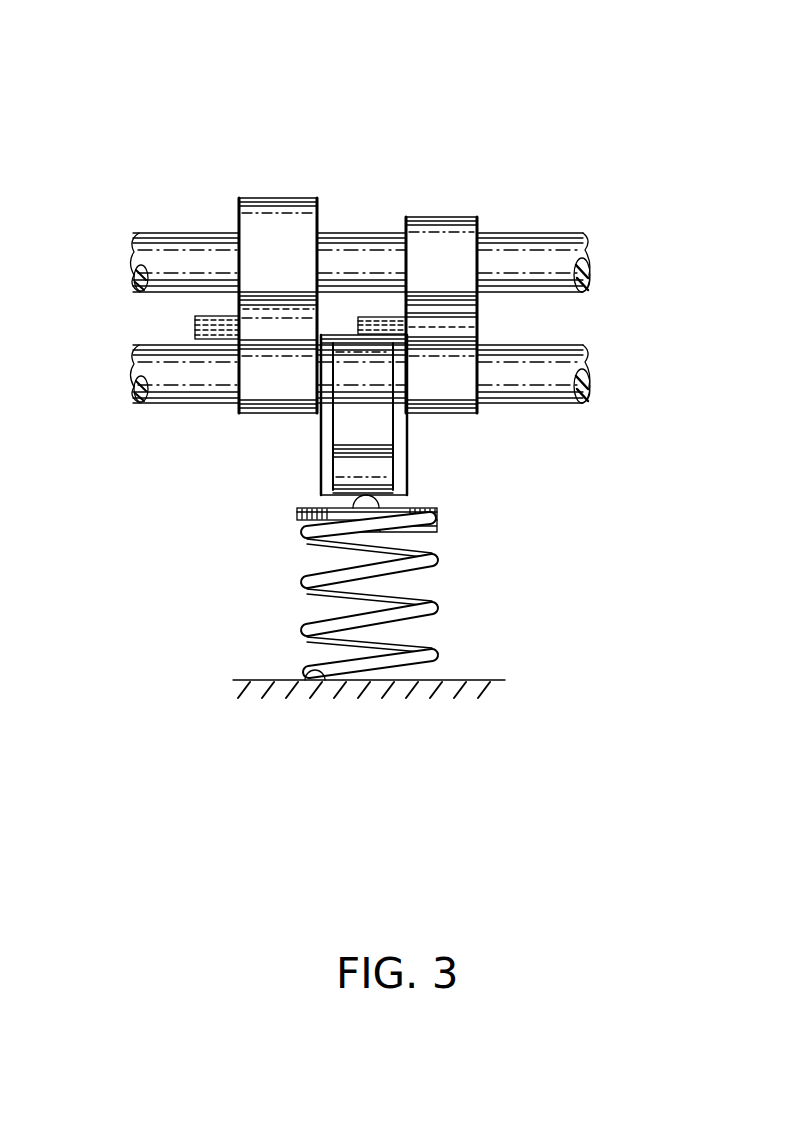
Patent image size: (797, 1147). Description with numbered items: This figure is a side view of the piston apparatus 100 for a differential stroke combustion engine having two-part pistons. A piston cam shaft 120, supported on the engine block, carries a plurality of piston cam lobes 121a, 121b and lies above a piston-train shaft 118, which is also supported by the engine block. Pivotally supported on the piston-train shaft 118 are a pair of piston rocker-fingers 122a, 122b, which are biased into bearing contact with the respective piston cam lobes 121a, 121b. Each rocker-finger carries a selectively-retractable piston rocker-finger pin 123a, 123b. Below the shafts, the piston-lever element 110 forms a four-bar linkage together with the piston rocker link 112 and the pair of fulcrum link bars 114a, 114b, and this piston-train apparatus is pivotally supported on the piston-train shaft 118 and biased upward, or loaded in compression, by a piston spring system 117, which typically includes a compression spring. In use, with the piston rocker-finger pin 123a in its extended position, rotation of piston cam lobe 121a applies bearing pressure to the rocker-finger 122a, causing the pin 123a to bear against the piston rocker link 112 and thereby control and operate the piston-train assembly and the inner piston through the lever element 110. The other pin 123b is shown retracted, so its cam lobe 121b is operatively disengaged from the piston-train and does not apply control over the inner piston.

The piston apparatus 100 is at (135, 50).
The piston-lever element 110 is at (318, 486).
The piston rocker link 112 is at (428, 410).
The fulcrum link bar 114a is at (406, 447).
The fulcrum link bar 114b is at (320, 448).
The piston spring system 117 is at (297, 590).
The piston-train shaft 118 is at (560, 402).
The piston cam shaft 120 is at (557, 262).
The piston cam lobe 121a is at (435, 217).
The piston cam lobe 121b is at (277, 198).
The piston rocker-finger 122a is at (484, 323).
The piston rocker-finger 122b is at (262, 320).
The piston rocker-finger pin 123a is at (386, 320).
The piston rocker-finger pin 123b is at (195, 328).